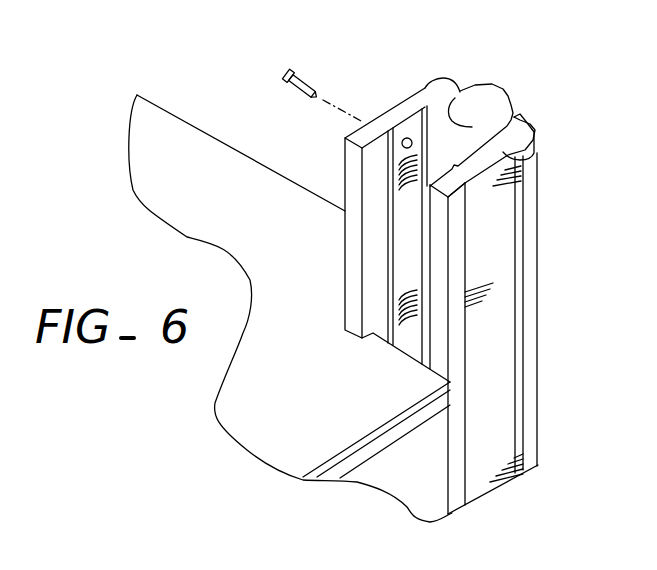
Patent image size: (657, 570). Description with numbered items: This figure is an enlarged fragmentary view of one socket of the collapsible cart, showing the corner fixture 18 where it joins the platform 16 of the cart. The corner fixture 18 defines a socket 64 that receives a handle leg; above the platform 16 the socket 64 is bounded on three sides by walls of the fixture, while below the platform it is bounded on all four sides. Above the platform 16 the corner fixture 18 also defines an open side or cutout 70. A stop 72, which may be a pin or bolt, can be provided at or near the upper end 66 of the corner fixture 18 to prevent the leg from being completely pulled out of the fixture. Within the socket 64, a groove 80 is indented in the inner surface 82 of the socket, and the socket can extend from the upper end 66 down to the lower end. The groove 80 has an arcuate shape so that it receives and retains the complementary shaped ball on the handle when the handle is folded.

The platform 16 is at (197, 118).
The corner fixture 18 is at (549, 267).
The socket 64 is at (455, 100).
The upper end 66 is at (518, 131).
The cutout 70 is at (372, 281).
The stop 72 is at (287, 62).
The groove 80 is at (415, 120).
The inner surface 82 is at (368, 179).